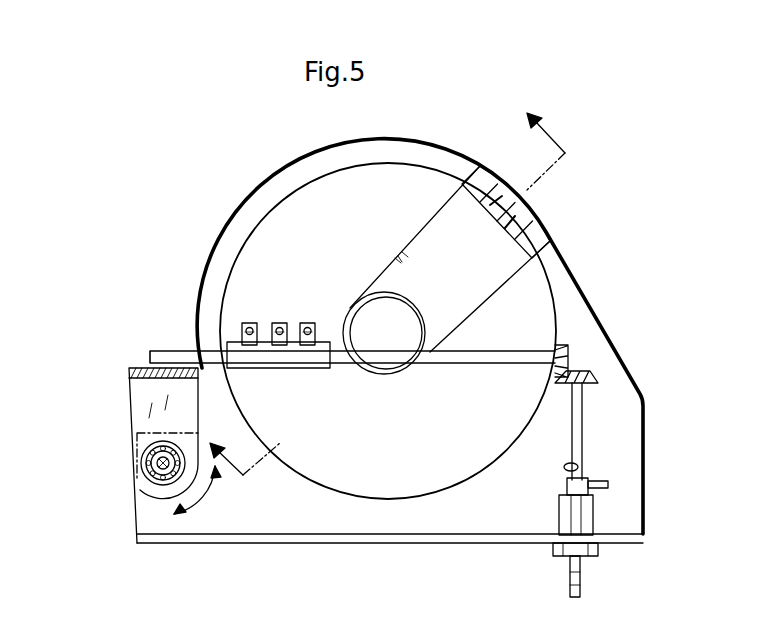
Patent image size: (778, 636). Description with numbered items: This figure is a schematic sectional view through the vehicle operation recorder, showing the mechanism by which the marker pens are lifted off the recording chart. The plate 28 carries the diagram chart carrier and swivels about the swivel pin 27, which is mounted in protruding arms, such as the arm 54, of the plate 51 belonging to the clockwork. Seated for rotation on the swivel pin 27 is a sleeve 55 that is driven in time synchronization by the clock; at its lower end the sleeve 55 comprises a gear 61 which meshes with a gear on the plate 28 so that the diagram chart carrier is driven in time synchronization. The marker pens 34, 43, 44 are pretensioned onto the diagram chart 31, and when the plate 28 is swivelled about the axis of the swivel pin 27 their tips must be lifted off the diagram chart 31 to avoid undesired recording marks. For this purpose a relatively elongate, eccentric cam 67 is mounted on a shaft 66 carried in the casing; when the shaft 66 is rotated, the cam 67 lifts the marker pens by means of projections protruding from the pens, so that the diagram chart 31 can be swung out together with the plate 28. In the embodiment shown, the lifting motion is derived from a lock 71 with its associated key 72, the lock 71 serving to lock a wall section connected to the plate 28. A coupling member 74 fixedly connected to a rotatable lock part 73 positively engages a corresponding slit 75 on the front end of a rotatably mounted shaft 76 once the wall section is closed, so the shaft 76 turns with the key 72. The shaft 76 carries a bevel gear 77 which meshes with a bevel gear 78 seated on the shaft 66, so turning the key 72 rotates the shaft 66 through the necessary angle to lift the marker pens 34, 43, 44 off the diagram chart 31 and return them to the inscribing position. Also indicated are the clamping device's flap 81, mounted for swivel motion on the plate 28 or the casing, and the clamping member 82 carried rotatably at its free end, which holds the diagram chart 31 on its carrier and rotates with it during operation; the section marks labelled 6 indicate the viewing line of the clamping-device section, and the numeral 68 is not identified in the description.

The section line 6- 6 is at (395, 309).
The swivel pin 27 is at (160, 470).
The plate 28 is at (572, 290).
The diagram chart 31 is at (540, 280).
The marker pen 34 is at (249, 322).
The marker pen 43 is at (280, 322).
The marker pen 44 is at (309, 322).
The plate 51 is at (138, 406).
The arm 54 is at (130, 470).
The sleeve 55 is at (147, 455).
The gear 61 is at (145, 480).
The shaft 66 is at (453, 365).
The eccentric cam 67 is at (270, 368).
The screws 68 is at (228, 344).
The lock 71 is at (604, 550).
The key 72 is at (585, 580).
The rotatable lock part 73 is at (566, 488).
The coupling member 74 is at (596, 475).
The slit 75 is at (586, 462).
The shaft 76 is at (584, 415).
The bevel gear 77 is at (600, 378).
The bevel gear 78 is at (560, 345).
The flap 81 is at (420, 230).
The clamping member 82 is at (378, 303).